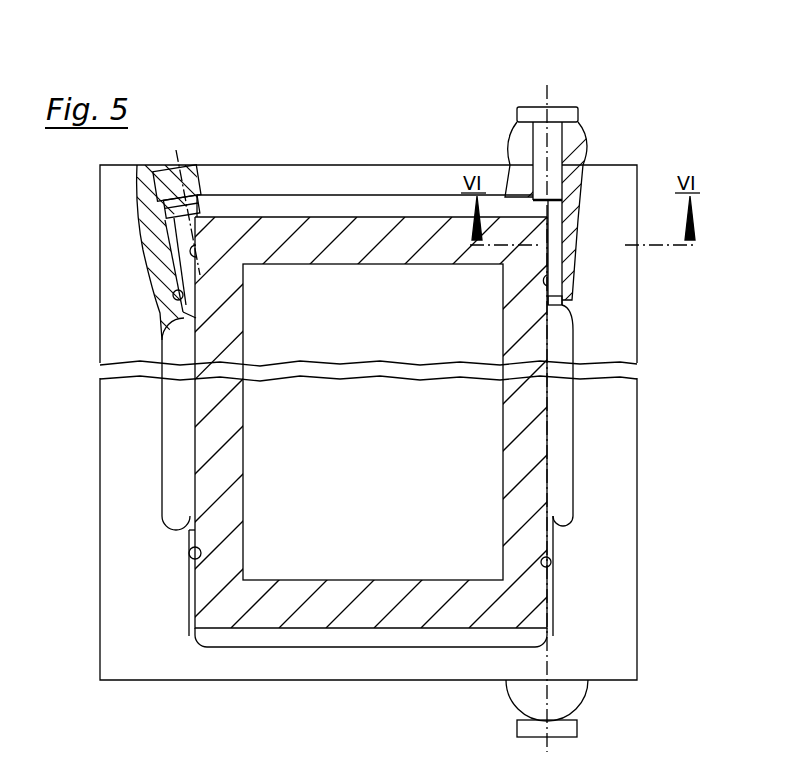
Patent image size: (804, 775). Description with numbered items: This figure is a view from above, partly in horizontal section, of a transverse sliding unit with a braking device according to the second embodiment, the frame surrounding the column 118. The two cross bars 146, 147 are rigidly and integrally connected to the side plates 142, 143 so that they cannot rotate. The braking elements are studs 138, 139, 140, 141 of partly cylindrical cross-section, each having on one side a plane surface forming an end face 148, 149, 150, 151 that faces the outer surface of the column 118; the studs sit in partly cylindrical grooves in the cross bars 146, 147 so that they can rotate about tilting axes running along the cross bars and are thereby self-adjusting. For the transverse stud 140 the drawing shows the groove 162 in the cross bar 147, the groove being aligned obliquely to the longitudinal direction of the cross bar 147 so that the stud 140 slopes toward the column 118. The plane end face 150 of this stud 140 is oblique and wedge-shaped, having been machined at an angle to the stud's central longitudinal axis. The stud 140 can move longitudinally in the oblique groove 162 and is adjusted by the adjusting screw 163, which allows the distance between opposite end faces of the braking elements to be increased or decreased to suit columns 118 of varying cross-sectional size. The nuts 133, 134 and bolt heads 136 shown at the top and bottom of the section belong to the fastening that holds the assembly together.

The column 118 is at (288, 592).
The spherical nut 133 is at (582, 145).
The spherical nut 134 is at (590, 694).
The bolt head / nut 136 is at (520, 107).
The stud 138 is at (557, 250).
The stud 139 is at (552, 594).
The transverse stud 140 is at (187, 283).
The stud 141 is at (190, 612).
The side plate 142 is at (275, 183).
The side plate 143 is at (297, 664).
The cross bar 146 is at (620, 425).
The cross bar 147 is at (113, 573).
The end face 148 is at (552, 300).
The end face 149 is at (551, 556).
The plane end face 150 is at (190, 260).
The end face 151 is at (188, 560).
The groove 162 is at (175, 304).
The adjusting screw 163 is at (192, 170).